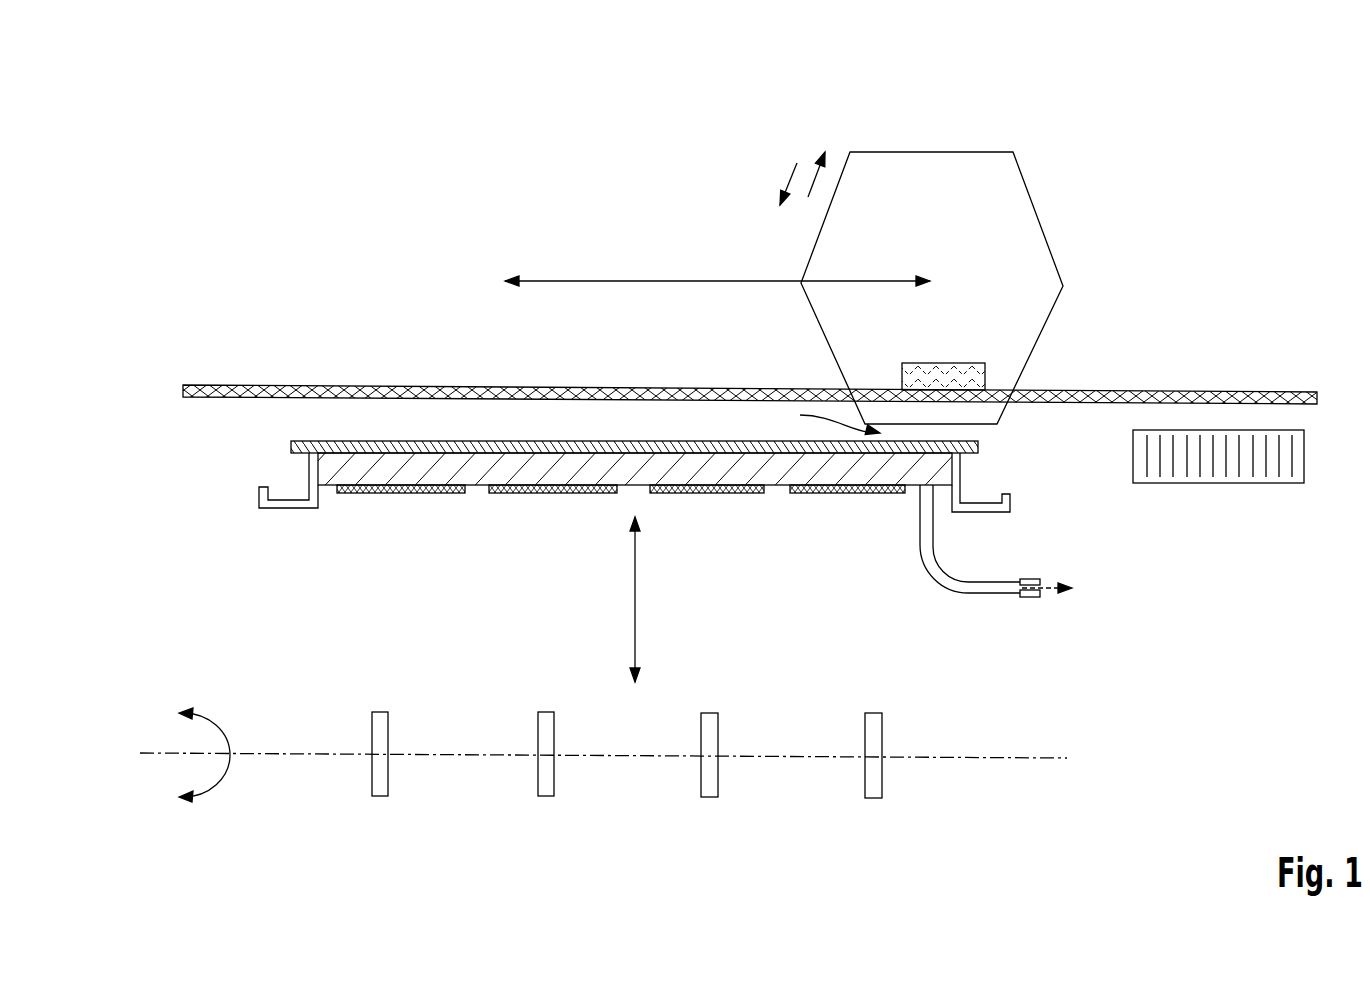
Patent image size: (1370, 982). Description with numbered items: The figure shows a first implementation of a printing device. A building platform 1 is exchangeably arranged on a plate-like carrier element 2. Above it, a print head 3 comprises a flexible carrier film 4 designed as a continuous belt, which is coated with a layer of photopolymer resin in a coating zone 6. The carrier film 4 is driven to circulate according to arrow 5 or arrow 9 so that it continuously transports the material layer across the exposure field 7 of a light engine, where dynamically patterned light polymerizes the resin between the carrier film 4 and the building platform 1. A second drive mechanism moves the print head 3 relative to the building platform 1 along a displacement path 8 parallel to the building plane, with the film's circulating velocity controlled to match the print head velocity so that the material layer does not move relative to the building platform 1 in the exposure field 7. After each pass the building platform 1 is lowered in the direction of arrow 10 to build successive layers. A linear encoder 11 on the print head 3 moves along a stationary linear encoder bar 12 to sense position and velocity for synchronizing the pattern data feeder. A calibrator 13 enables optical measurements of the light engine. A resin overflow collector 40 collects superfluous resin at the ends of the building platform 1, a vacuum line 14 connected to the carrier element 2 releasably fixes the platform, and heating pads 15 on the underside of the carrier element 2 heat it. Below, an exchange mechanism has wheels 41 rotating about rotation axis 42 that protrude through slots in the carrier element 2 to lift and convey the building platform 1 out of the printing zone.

The building platform 1 is at (978, 448).
The plate-like carrier element 2 is at (485, 472).
The print head 3 is at (940, 198).
The flexible carrier film 4 is at (1040, 218).
The arrow 5 is at (784, 185).
The coating zone 6 is at (903, 132).
The exposure field 7 is at (830, 417).
The displacement path 8 is at (668, 281).
The arrow 9 is at (818, 162).
The arrow 10 is at (635, 593).
The linear encoder 11 is at (975, 377).
The stationary linear encoder bar 12 is at (258, 388).
The calibrator 13 is at (1203, 458).
The vacuum line 14 is at (987, 590).
The heating pads 15 is at (705, 494).
The resin overflow collector 40 is at (1010, 503).
The wheels 41 is at (380, 796).
The rotation axis 42 is at (1013, 758).